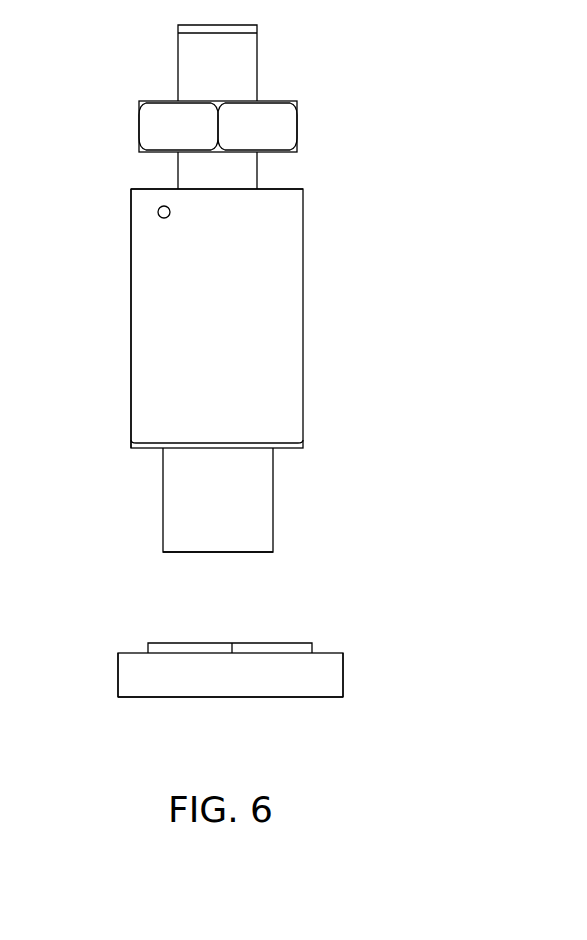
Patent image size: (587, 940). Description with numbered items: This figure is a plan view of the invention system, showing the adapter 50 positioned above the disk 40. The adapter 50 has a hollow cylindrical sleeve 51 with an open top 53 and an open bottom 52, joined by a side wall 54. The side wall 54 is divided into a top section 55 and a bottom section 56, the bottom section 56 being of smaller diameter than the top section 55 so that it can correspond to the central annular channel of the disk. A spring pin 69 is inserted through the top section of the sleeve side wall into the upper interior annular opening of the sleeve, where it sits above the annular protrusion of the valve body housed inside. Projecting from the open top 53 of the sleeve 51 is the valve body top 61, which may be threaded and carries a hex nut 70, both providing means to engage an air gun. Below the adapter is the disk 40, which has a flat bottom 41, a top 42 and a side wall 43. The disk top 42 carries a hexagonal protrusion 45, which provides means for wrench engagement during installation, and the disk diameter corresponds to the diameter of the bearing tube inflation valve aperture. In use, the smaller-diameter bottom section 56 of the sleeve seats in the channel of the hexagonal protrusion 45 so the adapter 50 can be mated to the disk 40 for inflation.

The adapter 50 is at (393, 83).
The valve body top 61 is at (257, 63).
The hex nut 70 is at (297, 125).
The open top 53 is at (280, 189).
The spring pin 69 is at (158, 215).
The hollow cylindrical sleeve 51 is at (131, 287).
The side wall 54 is at (131, 379).
The top section 55 is at (275, 339).
The bottom section 56 is at (246, 509).
The open bottom 52 is at (260, 553).
The disk 40 is at (118, 677).
The top 42 is at (128, 653).
The flat bottom 41 is at (147, 697).
The side wall 43 is at (334, 668).
The hexagonal protrusion 45 is at (313, 650).